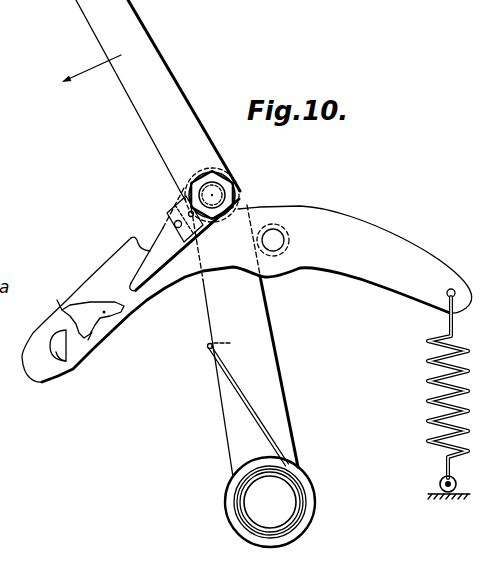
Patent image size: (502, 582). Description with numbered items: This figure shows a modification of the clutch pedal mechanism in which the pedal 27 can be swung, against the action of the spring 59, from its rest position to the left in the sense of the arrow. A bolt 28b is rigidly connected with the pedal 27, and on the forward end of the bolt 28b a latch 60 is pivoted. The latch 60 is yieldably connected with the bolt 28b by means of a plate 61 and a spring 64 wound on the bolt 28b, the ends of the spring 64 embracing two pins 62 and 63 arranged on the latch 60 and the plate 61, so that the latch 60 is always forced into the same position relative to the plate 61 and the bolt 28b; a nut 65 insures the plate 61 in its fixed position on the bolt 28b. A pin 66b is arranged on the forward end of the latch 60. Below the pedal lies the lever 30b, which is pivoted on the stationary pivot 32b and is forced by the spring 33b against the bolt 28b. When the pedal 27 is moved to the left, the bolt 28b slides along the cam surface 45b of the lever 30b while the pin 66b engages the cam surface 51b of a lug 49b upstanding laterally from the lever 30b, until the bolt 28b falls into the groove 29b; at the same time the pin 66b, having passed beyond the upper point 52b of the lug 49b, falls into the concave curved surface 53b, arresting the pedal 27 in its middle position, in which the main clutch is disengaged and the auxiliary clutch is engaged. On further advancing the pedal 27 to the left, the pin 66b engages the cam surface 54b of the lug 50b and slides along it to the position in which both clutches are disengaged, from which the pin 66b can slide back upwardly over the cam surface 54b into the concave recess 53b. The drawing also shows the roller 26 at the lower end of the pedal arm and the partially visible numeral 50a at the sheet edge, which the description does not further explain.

The pedal 27 is at (170, 72).
The spring 64 is at (225, 174).
The nut 65 is at (238, 181).
The bolt 28b is at (216, 197).
The lever 30b is at (400, 278).
The cam surface 45b is at (302, 203).
The stationary pivot 32b is at (284, 241).
The groove 29b is at (130, 237).
The latch 60 is at (165, 260).
The plate 61 is at (198, 229).
The pin 62 is at (170, 226).
The pin 63 is at (188, 216).
The cam surface 51b is at (96, 301).
The lug 49b is at (106, 313).
The upper point 52b is at (62, 309).
The cam surface 54b is at (50, 338).
The lug 50b is at (64, 358).
The concave curved surface 53b is at (88, 340).
The pin 66b is at (161, 291).
The opening 50a is at (10, 226).
The spring 59 is at (240, 398).
The roller 26 is at (288, 507).
The spring 33b is at (430, 398).